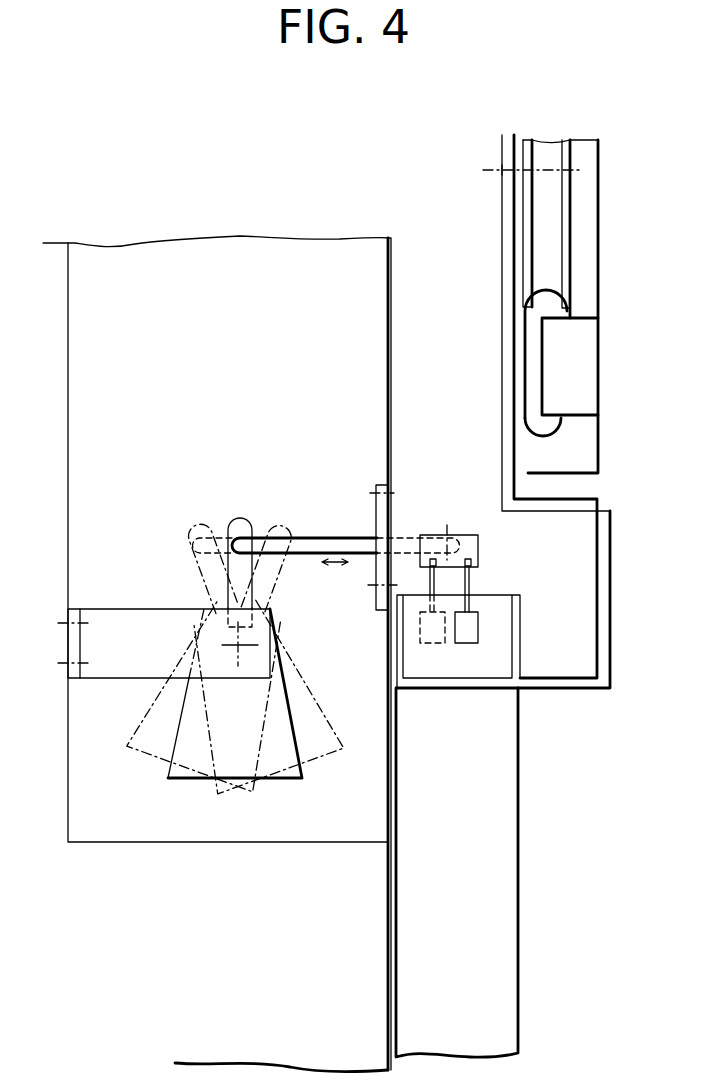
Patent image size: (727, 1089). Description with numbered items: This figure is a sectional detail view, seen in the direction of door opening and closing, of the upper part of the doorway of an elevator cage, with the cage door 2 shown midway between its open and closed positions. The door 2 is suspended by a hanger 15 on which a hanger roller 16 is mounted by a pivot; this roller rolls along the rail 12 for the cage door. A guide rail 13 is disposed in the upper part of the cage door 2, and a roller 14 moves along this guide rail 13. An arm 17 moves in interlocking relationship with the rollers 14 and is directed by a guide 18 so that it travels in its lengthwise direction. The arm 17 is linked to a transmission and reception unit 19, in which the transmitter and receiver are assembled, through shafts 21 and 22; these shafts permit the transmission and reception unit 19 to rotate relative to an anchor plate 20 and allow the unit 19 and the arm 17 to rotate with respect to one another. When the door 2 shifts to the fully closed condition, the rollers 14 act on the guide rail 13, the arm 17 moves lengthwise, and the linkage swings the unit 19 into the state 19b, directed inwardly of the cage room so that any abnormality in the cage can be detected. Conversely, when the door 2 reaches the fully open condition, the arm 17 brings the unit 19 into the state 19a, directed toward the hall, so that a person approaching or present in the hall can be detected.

The cage door 2 is at (518, 826).
The rail 12 is at (550, 435).
The guide rail 13 is at (494, 594).
The roller 14 is at (440, 644).
The hanger 15 is at (501, 270).
The hanger roller 16 is at (570, 235).
The arm 17 is at (320, 537).
The guide 18 is at (377, 490).
The transmission and reception unit 19 is at (303, 779).
The state of the transmission and reception unit under fully open door condition 19a is at (296, 658).
The state of the transmission and reception unit under fully closed door condition 19b is at (135, 748).
The anchor plate 20 is at (140, 608).
The shaft 21 is at (240, 517).
The shaft 22 is at (222, 645).